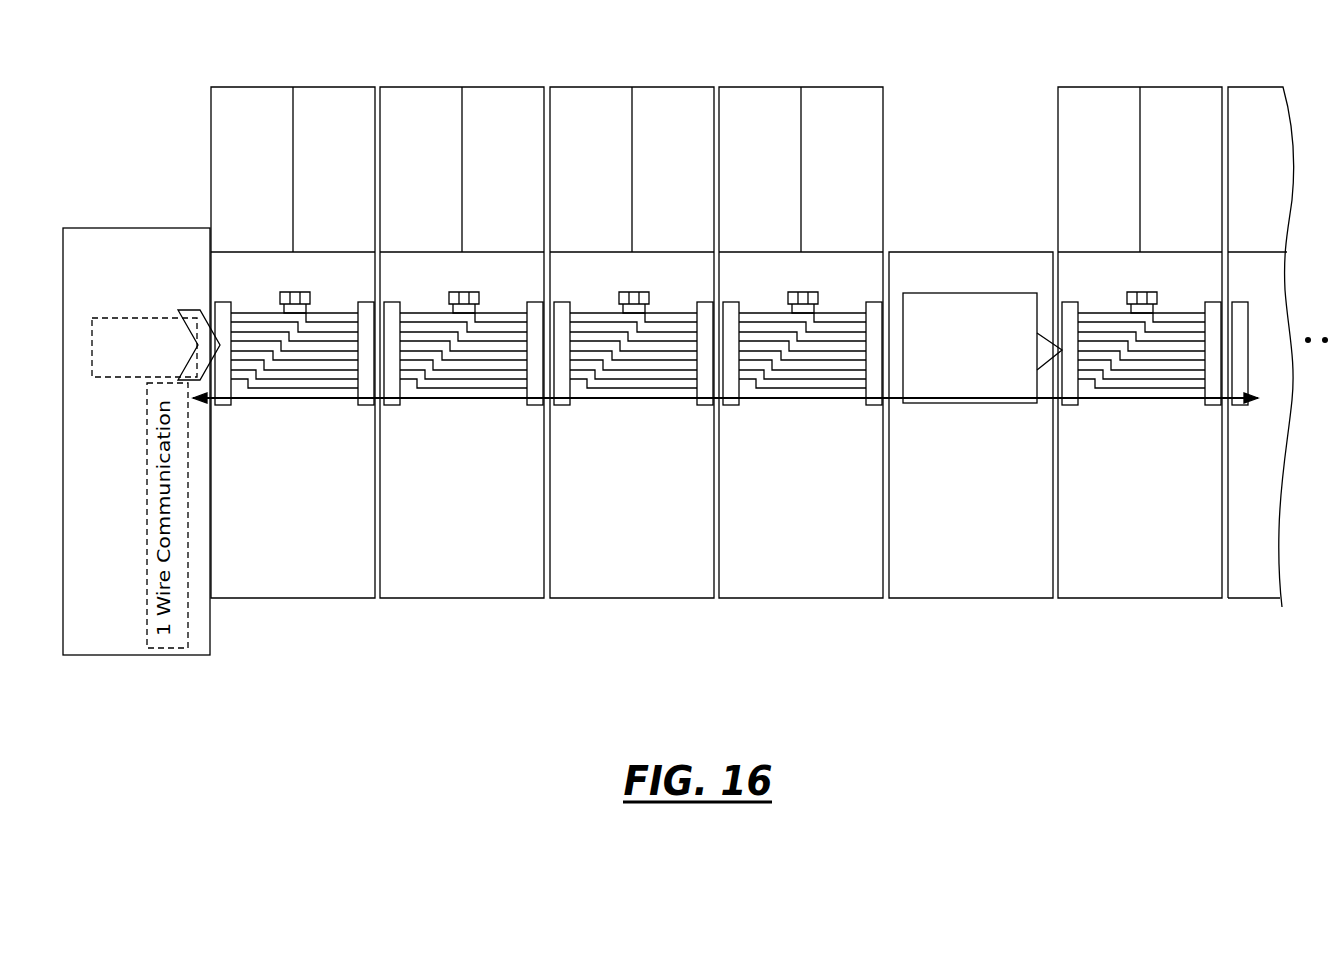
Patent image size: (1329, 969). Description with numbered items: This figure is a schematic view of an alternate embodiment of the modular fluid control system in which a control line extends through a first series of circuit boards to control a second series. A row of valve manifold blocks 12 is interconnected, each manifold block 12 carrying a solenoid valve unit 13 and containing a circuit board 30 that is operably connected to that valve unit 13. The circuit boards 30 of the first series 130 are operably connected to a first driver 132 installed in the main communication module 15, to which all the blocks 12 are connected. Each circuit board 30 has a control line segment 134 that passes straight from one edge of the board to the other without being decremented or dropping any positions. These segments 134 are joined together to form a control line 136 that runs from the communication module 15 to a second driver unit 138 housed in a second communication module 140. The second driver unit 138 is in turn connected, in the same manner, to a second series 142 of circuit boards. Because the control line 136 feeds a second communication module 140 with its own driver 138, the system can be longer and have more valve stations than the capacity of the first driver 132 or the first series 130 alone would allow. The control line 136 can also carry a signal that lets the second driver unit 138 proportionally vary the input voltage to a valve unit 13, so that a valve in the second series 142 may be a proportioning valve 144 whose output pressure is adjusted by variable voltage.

The valve manifold block 12 is at (352, 590).
The single solenoid valve unit 13 is at (752, 322).
The communication module 15 is at (107, 633).
The circuit board 30 is at (338, 297).
The first series of circuit boards 130 is at (525, 409).
The first driver 132 is at (147, 320).
The control line segment 134 is at (415, 398).
The control line 136 is at (588, 404).
The second driver unit 138 is at (1023, 305).
The second communication module 140 is at (1028, 555).
The second series of circuit boards 142 is at (1170, 406).
The proportioning valve 144 is at (1072, 103).